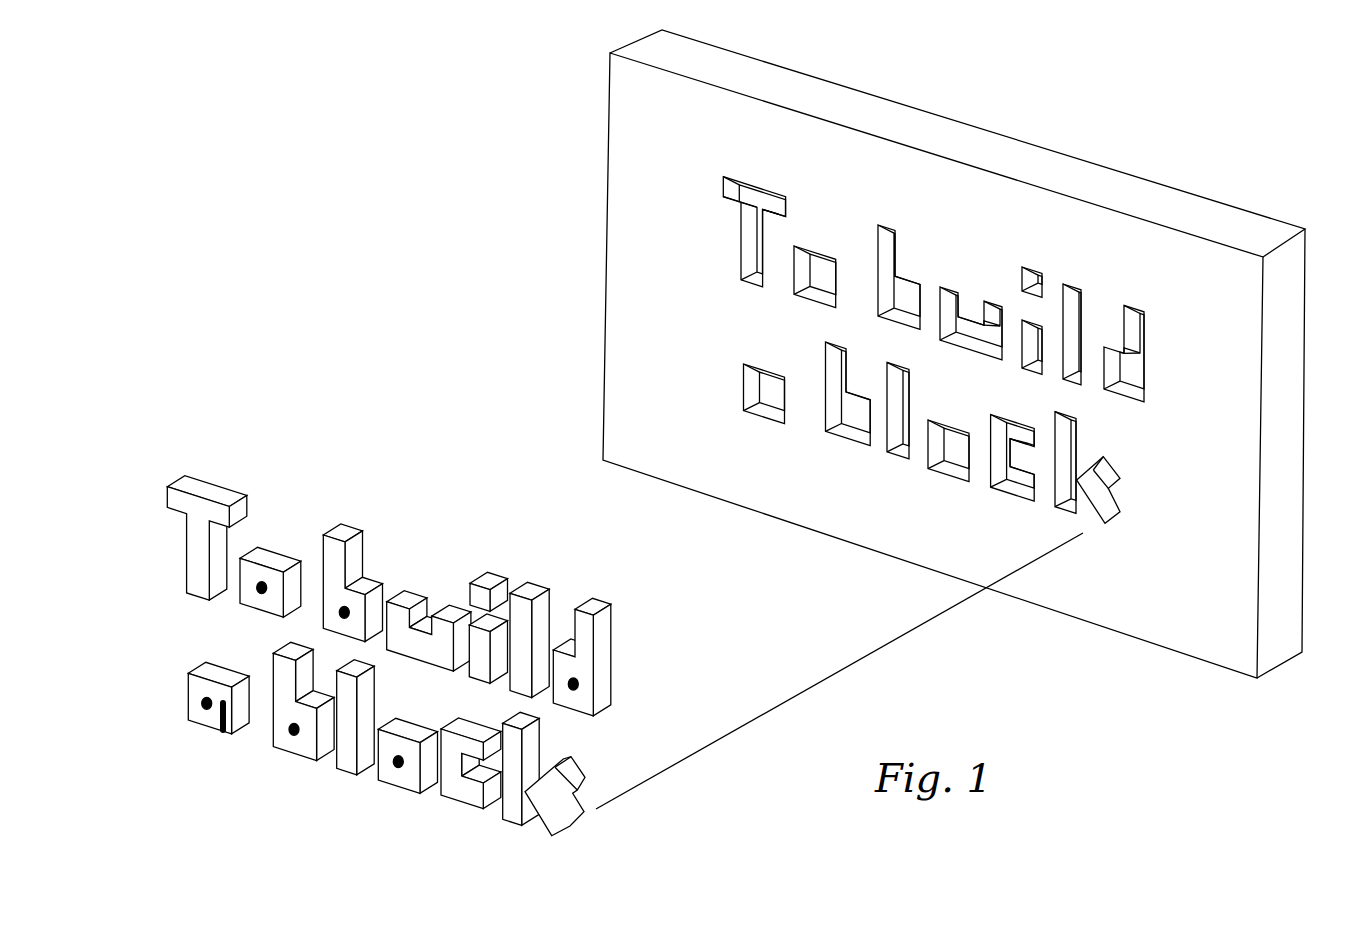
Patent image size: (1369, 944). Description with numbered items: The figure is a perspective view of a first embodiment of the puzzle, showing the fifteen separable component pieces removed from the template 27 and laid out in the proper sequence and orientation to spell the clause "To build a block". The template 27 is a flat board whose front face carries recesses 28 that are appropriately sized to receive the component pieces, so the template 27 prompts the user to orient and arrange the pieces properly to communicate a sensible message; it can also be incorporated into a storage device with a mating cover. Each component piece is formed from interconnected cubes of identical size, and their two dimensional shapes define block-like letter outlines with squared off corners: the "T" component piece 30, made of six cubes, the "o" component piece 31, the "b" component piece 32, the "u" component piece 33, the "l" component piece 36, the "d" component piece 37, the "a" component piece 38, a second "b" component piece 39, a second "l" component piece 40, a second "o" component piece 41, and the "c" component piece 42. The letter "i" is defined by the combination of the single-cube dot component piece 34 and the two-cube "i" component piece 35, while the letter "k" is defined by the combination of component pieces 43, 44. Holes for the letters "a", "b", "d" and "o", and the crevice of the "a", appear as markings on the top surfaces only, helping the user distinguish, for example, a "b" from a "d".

The template 27 is at (1192, 222).
The recesses 28 is at (745, 381).
The "T" component piece 30 is at (201, 478).
The "o" component piece 31 is at (280, 552).
The "b" component piece 32 is at (350, 527).
The "u" component piece 33 is at (413, 600).
The "i" dot component piece 34 is at (497, 572).
The "i" component piece 35 is at (470, 622).
The "l" component piece 36 is at (542, 585).
The "d" component piece 37 is at (615, 685).
The "a" component piece 38 is at (208, 728).
The "b" component piece 39 is at (292, 755).
The "l" component piece 40 is at (343, 772).
The "o" component piece 41 is at (395, 785).
The "c" component piece 42 is at (460, 807).
The "k" component piece 43 is at (516, 820).
The "k" component piece 44 is at (576, 818).